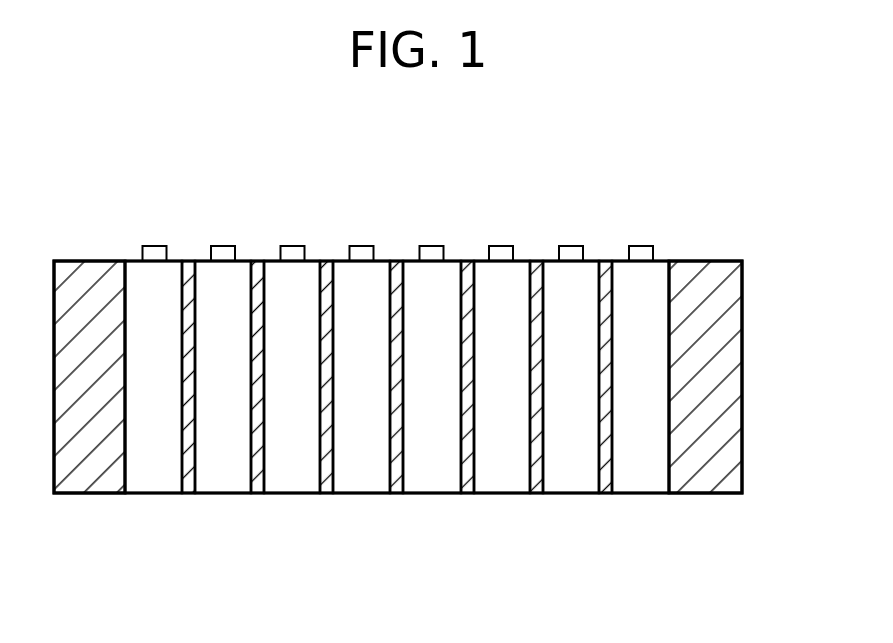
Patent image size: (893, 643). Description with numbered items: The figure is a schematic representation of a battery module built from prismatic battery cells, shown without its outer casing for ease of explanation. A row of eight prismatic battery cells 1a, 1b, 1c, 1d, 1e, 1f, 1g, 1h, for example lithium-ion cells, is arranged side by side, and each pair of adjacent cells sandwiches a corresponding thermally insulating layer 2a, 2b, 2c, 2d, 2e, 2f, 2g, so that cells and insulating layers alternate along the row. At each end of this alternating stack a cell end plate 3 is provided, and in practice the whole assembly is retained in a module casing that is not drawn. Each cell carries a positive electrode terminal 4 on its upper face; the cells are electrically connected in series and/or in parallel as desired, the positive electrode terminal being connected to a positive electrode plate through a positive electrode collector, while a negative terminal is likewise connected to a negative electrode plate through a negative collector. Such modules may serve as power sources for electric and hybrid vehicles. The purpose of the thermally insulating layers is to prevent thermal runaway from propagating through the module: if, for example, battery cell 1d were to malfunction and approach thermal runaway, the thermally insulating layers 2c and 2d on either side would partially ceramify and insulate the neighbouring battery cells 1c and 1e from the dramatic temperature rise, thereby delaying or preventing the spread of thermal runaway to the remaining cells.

The prismatic battery cell 1a is at (150, 493).
The prismatic battery cell 1b is at (222, 493).
The prismatic battery cell 1c is at (290, 493).
The prismatic battery cell 1d is at (362, 493).
The prismatic battery cell 1e is at (427, 493).
The prismatic battery cell 1f is at (495, 493).
The prismatic battery cell 1g is at (573, 493).
The prismatic battery cell 1h is at (641, 493).
The thermally insulating layer 2a is at (188, 261).
The thermally insulating layer 2b is at (258, 261).
The thermally insulating layer 2c is at (326, 261).
The thermally insulating layer 2d is at (396, 261).
The thermally insulating layer 2e is at (468, 261).
The thermally insulating layer 2f is at (536, 261).
The thermally insulating layer 2g is at (606, 261).
The cell end plate 3 is at (92, 493).
The positive electrode terminal 4 is at (152, 247).